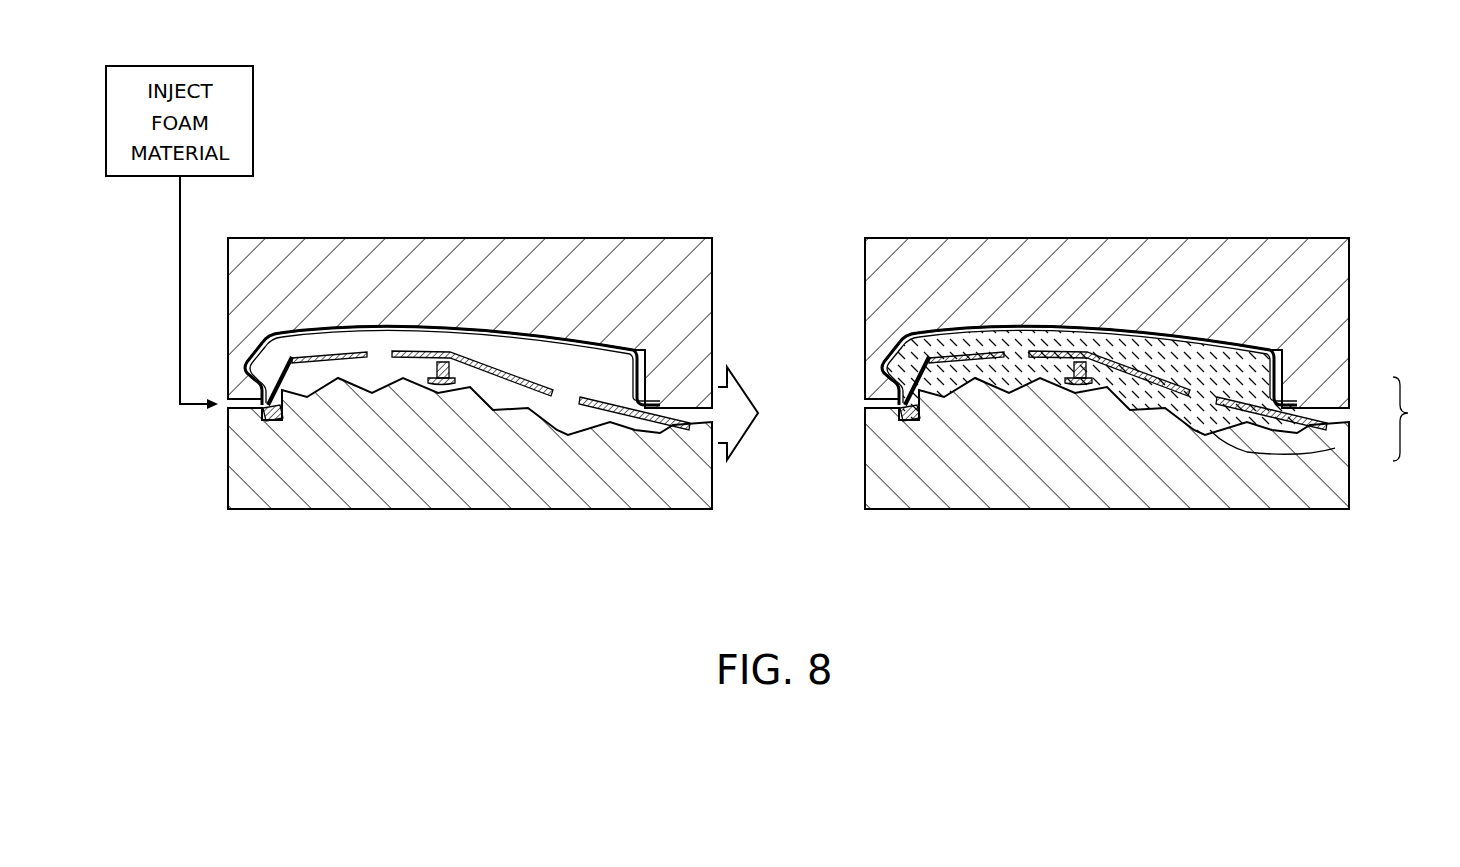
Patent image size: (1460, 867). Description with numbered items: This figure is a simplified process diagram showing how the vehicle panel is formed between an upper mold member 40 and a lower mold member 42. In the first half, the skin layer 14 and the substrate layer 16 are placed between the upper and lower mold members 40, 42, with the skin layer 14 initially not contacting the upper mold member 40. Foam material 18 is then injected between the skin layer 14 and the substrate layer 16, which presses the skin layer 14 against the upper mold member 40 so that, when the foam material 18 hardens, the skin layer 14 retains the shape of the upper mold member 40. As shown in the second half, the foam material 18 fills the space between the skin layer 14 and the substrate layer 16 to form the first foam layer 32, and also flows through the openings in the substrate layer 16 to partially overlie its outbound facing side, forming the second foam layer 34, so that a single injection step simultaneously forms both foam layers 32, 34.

The skin layer 14 is at (333, 320).
The substrate layer 16 is at (490, 350).
The foam material 18 is at (1417, 419).
The first foam layer 32 is at (1217, 373).
The second foam layer 34 is at (1335, 447).
The upper mold member 40 is at (405, 238).
The lower mold member 42 is at (405, 510).